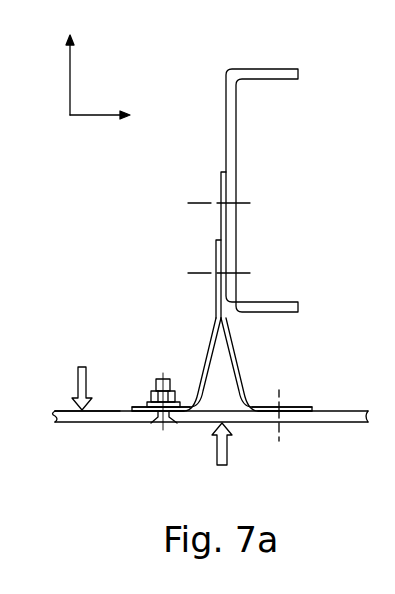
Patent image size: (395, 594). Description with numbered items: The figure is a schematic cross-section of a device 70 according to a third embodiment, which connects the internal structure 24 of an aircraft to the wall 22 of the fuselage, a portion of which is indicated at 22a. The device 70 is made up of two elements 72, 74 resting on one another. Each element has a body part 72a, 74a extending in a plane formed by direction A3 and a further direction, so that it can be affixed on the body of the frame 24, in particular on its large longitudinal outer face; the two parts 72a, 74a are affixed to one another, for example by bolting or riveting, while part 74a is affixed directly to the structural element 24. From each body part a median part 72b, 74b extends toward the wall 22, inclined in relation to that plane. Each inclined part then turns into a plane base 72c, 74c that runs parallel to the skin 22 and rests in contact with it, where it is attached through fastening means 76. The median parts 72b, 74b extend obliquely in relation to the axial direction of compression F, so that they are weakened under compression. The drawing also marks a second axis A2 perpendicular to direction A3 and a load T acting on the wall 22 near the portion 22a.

The wall 22 is at (332, 423).
The panel portion 22a is at (63, 411).
The internal structure 24 is at (232, 71).
The device 70 is at (117, 263).
The element 72 is at (154, 316).
The part 72a is at (216, 256).
The median part 72b is at (208, 346).
The base 72c is at (168, 357).
The element 74 is at (245, 297).
The part 74a is at (221, 192).
The median part 74b is at (234, 343).
The base 74c is at (264, 371).
The fastening means 76 is at (152, 435).
The second axis A2 is at (97, 116).
The direction A3 is at (71, 78).
The tension force T is at (79, 372).
The axial direction of compression F is at (215, 462).